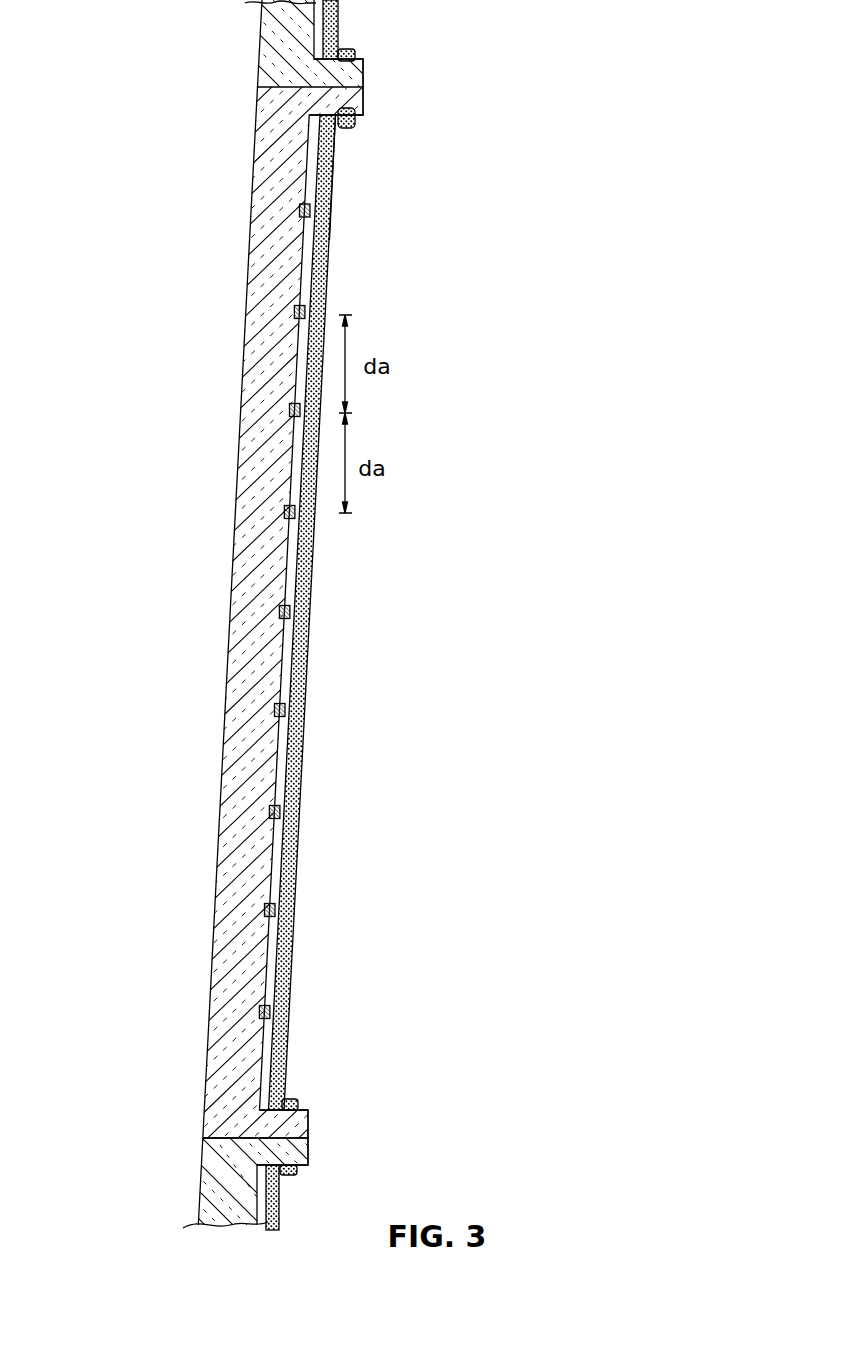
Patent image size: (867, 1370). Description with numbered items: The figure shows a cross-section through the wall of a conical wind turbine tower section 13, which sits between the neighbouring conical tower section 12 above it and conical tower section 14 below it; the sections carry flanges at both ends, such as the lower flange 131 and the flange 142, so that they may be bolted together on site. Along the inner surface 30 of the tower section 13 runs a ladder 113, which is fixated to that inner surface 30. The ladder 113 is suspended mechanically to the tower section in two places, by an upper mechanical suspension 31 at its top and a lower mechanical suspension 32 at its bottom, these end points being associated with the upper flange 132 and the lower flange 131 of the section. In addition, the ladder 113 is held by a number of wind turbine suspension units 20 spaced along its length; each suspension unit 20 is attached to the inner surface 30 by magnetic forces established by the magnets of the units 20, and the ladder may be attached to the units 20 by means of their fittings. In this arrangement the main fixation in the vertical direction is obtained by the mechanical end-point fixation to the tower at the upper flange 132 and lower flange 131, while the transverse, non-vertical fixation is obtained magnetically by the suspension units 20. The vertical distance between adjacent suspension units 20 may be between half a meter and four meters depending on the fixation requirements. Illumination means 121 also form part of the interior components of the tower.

The conical tower section 12 is at (259, 45).
The conical tower section 13 is at (254, 155).
The conical tower section 14 is at (202, 1177).
The wind turbine suspension unit 20 is at (300, 312).
The inner surface 30 is at (281, 655).
The upper mechanical suspension 31 is at (358, 112).
The lower mechanical suspension 32 is at (294, 1098).
The ladder 113 is at (332, 162).
The illumination means 121 is at (363, 62).
The lower flange 131 is at (309, 1118).
The upper flange 132 is at (363, 97).
The flange 142 is at (309, 1150).